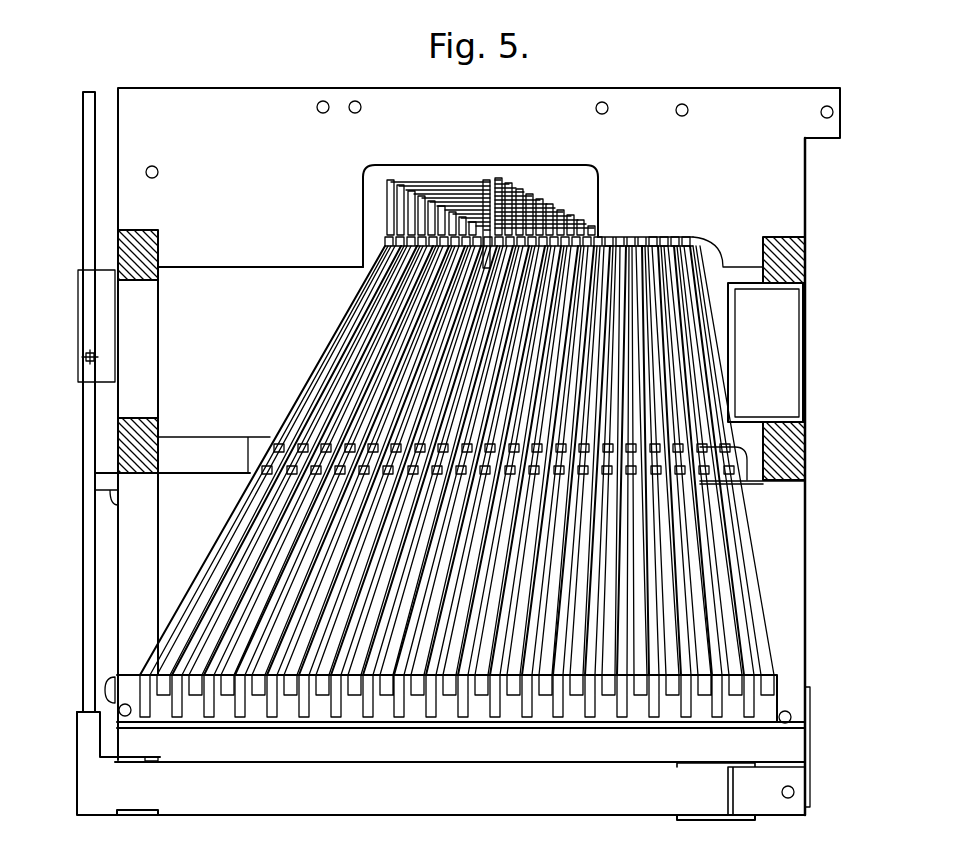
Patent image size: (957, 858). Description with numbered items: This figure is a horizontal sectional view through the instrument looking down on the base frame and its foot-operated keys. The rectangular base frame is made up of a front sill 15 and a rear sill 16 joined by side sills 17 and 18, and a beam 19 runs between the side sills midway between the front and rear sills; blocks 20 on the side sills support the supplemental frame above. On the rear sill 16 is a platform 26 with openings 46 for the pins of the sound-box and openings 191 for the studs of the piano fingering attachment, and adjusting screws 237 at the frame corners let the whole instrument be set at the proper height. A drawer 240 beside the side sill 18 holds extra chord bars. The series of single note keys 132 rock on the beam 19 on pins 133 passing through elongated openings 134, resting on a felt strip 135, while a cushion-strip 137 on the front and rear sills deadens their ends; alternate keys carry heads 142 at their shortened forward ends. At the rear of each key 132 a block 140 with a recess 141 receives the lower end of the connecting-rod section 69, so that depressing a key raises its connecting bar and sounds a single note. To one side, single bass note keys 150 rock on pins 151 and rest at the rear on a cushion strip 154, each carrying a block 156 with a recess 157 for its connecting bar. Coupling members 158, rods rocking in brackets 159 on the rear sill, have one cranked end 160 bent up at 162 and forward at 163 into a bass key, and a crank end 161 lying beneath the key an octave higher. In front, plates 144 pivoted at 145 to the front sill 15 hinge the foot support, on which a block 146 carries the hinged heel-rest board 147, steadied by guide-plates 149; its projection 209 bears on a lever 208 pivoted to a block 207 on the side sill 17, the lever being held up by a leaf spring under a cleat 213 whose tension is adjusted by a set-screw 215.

The openings 46 is at (326, 102).
The openings 191 is at (361, 106).
The platform 26 is at (479, 424).
The adjusting screws 237 is at (159, 174).
The rear sill 16 is at (580, 168).
The cranked end 160 is at (388, 178).
The upwardly bent portion 162 is at (415, 190).
The recess 157 is at (430, 200).
The cushion strip 154 is at (486, 186).
The coupling members 158 is at (510, 195).
The brackets 159 is at (544, 198).
The crank end 161 is at (555, 212).
The forwardly extending portion 163 is at (383, 182).
The block 156 is at (385, 200).
The rod 69 is at (390, 240).
The block 140 is at (612, 240).
The recess 141 is at (672, 240).
The blocks 20 is at (795, 272).
The side sill 17 is at (150, 398).
The cleat 213 is at (97, 326).
The set-screw 215 is at (92, 355).
The lever 208 is at (92, 612).
The block 207 is at (126, 506).
The beam 19 is at (186, 478).
The strip 135 is at (250, 440).
The pins 151 is at (255, 470).
The pins 133 is at (733, 453).
The openings 134 is at (752, 492).
The drawer 240 is at (765, 352).
The side sill 18 is at (797, 540).
The single note keys 132 is at (590, 705).
The single bass note keys 150 is at (272, 710).
The front sill 15 is at (336, 705).
The cushion-strip 137 is at (575, 702).
The heads 142 is at (668, 702).
The plates 144 is at (803, 744).
The pivot 145 is at (105, 692).
The heel-rest board 147 is at (441, 766).
The projection 209 is at (90, 740).
The guide-plates 149 is at (145, 808).
The block 146 is at (741, 789).